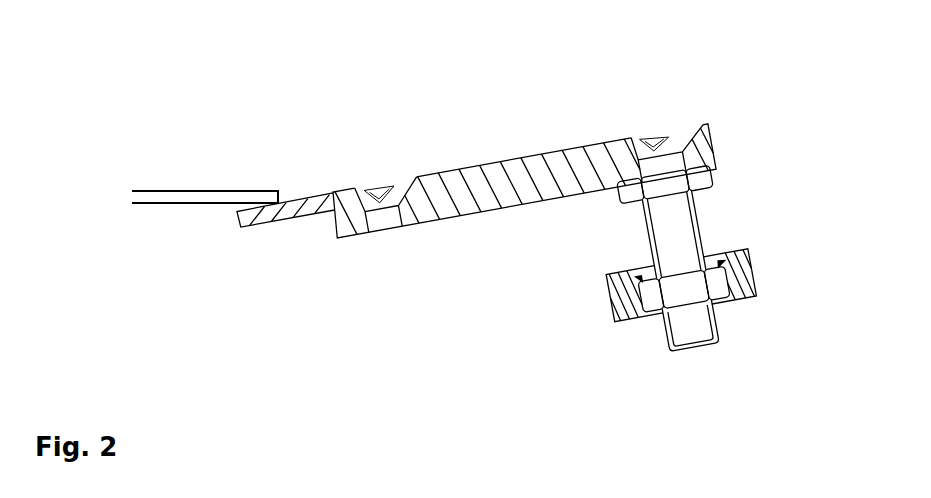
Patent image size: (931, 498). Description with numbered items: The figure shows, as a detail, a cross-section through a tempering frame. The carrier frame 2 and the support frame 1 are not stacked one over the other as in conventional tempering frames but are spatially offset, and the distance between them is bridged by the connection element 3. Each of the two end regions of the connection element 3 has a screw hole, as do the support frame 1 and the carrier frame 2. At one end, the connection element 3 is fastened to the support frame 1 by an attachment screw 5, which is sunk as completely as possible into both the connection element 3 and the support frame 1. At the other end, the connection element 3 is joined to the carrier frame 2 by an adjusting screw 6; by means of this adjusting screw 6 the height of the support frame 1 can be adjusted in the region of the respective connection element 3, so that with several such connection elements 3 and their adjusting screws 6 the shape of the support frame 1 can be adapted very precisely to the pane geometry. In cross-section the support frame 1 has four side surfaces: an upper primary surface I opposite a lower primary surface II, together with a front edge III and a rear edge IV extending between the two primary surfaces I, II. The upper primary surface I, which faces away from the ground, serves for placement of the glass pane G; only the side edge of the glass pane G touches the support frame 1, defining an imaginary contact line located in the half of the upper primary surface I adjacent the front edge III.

The glass pane G is at (215, 190).
The support frame 1 is at (332, 192).
The carrier frame 2 is at (754, 266).
The connection element 3 is at (607, 160).
The attachment screw 5 is at (397, 184).
The adjusting screw 6 is at (678, 242).
The upper primary surface I is at (304, 193).
The lower primary surface II is at (259, 230).
The front edge III is at (232, 220).
The rear edge IV is at (436, 177).